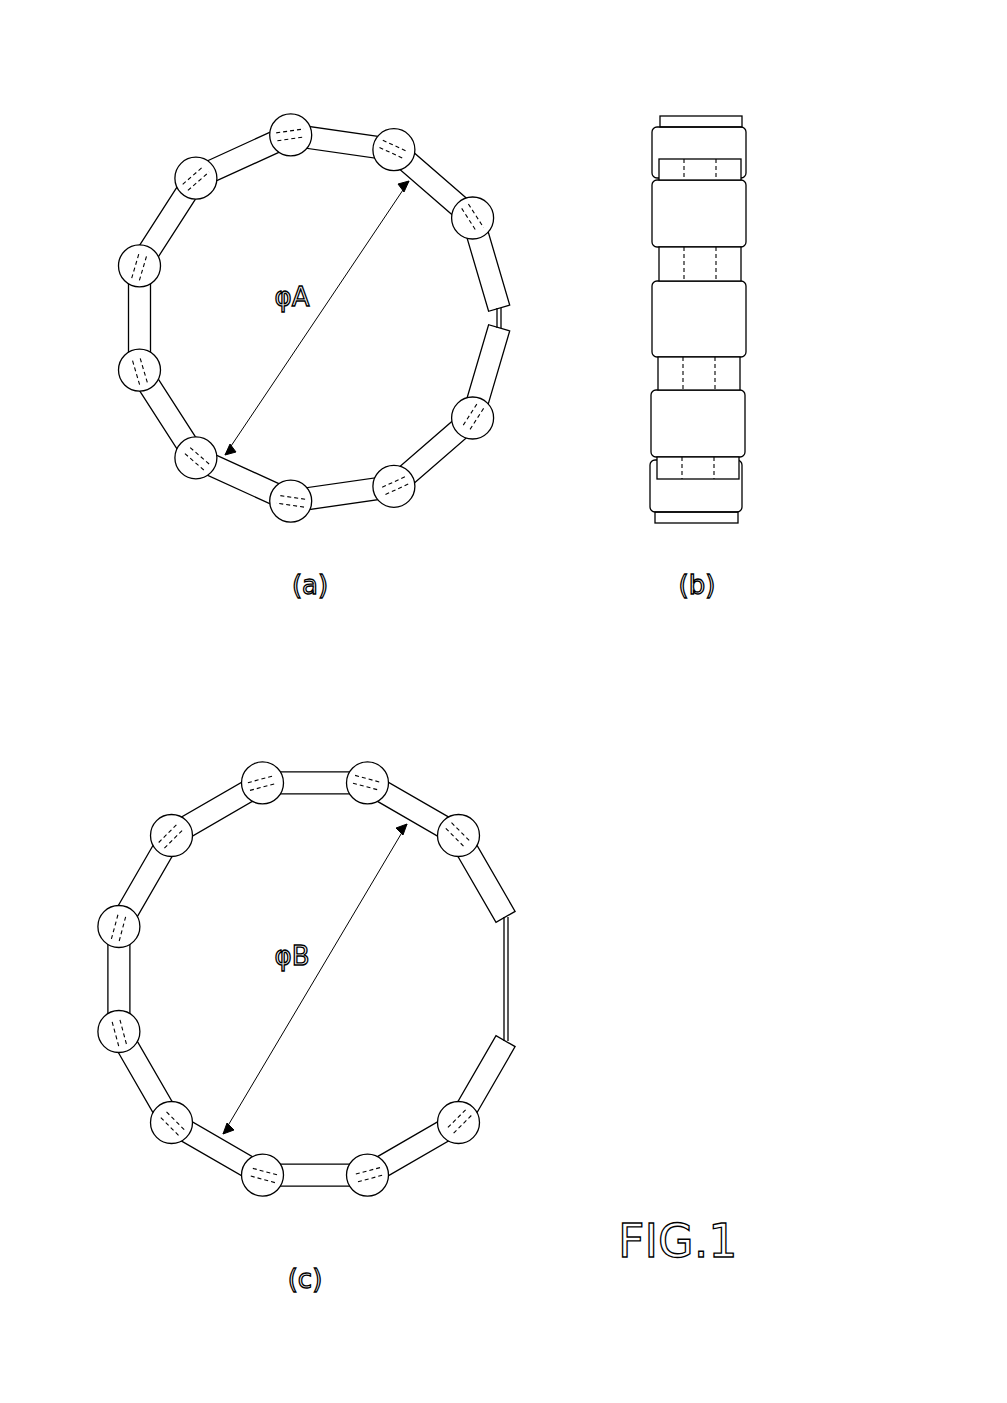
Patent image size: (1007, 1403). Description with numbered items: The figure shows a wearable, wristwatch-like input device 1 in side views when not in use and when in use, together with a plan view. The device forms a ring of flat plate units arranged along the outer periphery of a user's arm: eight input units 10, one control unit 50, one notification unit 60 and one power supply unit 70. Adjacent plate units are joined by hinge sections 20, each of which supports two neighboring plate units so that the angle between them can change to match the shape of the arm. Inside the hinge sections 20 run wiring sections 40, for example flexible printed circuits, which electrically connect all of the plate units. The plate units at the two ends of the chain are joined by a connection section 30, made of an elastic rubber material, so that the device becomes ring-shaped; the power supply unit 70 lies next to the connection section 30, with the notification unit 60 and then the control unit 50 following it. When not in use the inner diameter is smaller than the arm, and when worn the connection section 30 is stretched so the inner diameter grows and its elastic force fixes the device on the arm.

The input device 1 is at (420, 632).
The input unit 10 is at (243, 150).
The hinge section 20 is at (290, 116).
The connection section 30 is at (510, 318).
The wiring section 40 is at (180, 166).
The control unit 50 is at (341, 508).
The notification unit 60 is at (432, 462).
The power supply unit 70 is at (498, 385).